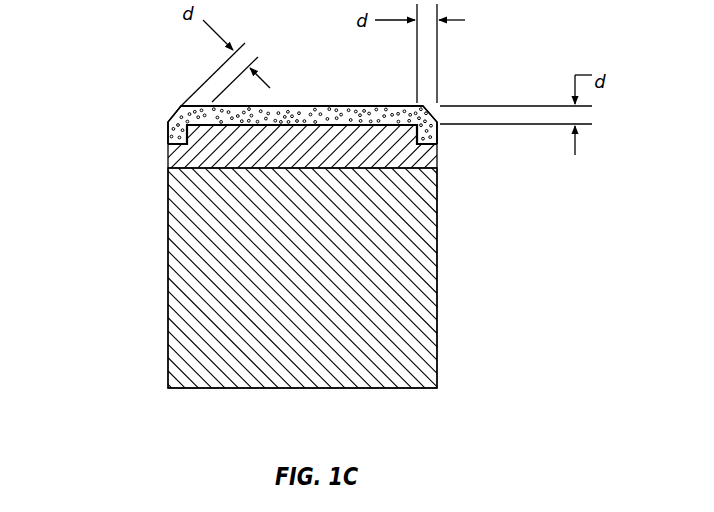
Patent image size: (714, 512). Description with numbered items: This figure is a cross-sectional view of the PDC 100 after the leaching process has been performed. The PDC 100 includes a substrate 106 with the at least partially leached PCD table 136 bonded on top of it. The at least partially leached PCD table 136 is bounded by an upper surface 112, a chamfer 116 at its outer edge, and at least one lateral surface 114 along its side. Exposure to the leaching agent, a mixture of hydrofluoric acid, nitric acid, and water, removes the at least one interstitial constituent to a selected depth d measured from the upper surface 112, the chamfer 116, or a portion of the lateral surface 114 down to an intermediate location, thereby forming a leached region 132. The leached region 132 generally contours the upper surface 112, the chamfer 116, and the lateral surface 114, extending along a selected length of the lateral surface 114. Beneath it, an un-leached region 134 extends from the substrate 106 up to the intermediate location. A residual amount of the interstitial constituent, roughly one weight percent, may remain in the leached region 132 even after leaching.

The PDC 100 is at (467, 61).
The substrate 106 is at (437, 270).
The upper surface 112 is at (318, 106).
The lateral surface 114 is at (168, 128).
The chamfer 116 is at (175, 112).
The leached region 132 is at (378, 106).
The un-leached region 134 is at (393, 160).
The at least partially leached PCD table 136 is at (441, 135).